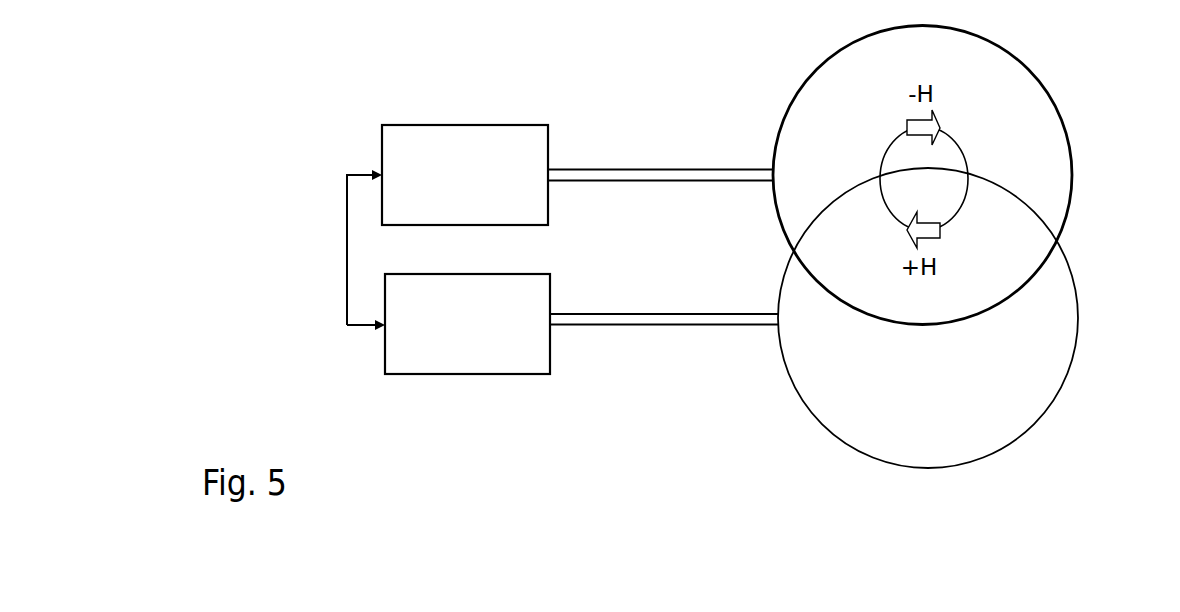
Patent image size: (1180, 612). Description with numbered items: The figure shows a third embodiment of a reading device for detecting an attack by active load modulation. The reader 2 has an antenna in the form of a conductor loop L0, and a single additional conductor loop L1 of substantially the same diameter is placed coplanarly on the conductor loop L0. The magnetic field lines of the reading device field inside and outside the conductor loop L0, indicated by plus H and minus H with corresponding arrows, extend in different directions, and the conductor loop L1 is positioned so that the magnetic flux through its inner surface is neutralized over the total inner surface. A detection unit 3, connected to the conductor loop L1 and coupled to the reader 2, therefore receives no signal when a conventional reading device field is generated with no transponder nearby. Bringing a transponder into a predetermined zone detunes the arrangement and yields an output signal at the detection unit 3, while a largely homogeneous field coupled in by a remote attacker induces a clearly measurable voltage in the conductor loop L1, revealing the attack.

The reader 2 is at (420, 374).
The detection unit 3 is at (452, 125).
The conductor loop L1 is at (1038, 77).
The conductor loop L0 is at (1078, 300).